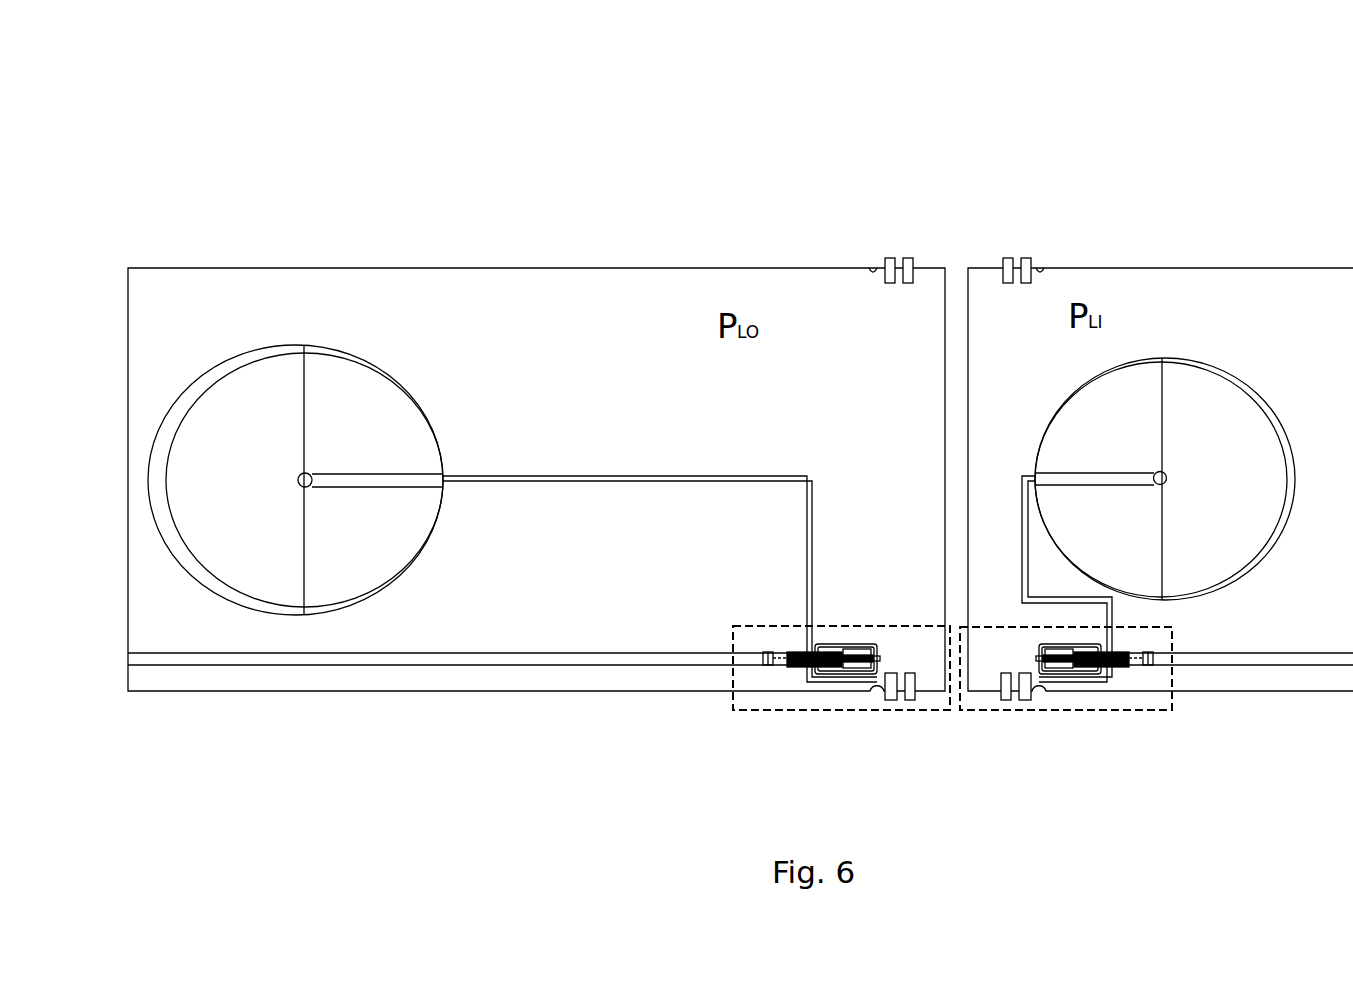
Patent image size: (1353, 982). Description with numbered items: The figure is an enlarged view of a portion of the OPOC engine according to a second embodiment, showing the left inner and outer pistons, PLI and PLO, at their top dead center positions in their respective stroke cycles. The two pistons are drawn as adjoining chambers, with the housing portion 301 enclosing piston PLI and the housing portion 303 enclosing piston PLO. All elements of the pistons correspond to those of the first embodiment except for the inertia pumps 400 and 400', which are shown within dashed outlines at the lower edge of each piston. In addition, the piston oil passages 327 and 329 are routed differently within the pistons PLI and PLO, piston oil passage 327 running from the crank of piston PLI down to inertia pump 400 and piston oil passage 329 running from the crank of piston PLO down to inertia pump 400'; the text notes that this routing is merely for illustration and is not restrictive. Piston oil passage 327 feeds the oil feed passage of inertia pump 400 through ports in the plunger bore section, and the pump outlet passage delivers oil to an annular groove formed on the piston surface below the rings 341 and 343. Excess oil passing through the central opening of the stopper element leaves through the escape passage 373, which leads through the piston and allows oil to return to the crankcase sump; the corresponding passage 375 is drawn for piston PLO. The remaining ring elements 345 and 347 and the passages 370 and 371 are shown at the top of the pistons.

The inner housing chamber 301 is at (968, 342).
The outer housing chamber 303 is at (948, 400).
The piston oil passage 327 is at (1022, 556).
The piston oil passage 329 is at (807, 568).
The ring 341 is at (1003, 258).
The ring 343 is at (1022, 257).
The inlet port 345 is at (908, 258).
The outlet port 347 is at (893, 258).
The pressure passage 370 is at (1036, 266).
The pressure passage 371 is at (873, 266).
The escape passage 373 is at (1225, 660).
The outer piston rod 375 is at (562, 660).
The inertia pump 400 is at (1094, 709).
The inertia pump 400' is at (773, 714).